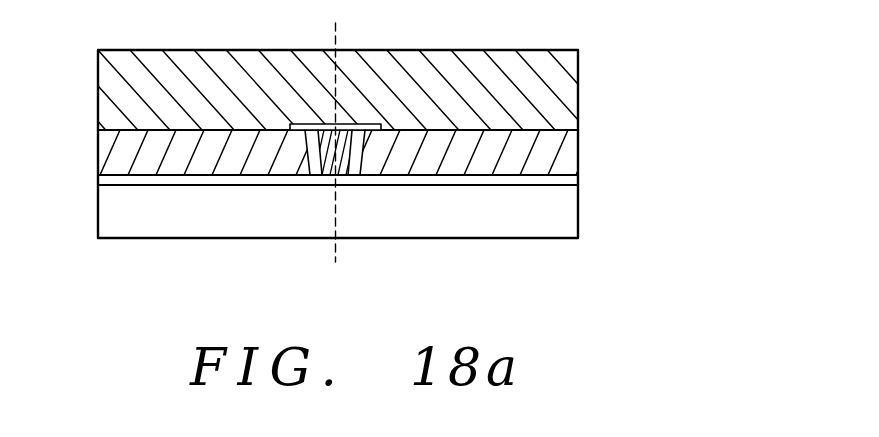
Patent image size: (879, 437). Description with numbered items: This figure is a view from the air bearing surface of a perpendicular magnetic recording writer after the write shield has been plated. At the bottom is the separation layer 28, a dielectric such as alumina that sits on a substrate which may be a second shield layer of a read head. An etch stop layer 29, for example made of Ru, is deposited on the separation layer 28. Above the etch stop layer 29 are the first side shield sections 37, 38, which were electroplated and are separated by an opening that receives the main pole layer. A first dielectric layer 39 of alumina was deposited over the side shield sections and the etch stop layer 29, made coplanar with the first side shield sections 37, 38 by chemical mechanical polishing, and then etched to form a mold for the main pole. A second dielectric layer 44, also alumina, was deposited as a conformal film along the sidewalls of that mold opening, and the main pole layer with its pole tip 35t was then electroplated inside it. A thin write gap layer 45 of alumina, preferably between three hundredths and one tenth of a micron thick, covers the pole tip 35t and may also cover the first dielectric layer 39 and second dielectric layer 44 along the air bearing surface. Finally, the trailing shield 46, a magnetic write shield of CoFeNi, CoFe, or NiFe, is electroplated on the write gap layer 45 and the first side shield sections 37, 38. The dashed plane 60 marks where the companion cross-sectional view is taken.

The separation layer 28 is at (565, 217).
The etch stop layer 29 is at (565, 182).
The first side shield section 37 is at (115, 152).
The first side shield section 38 is at (565, 150).
The first dielectric layer 39 is at (311, 175).
The second dielectric layer 44 is at (348, 174).
The write gap layer 45 is at (367, 126).
The trailing shield 46 is at (563, 86).
The pole tip 35t is at (325, 177).
The plane 60- 60 is at (336, 143).